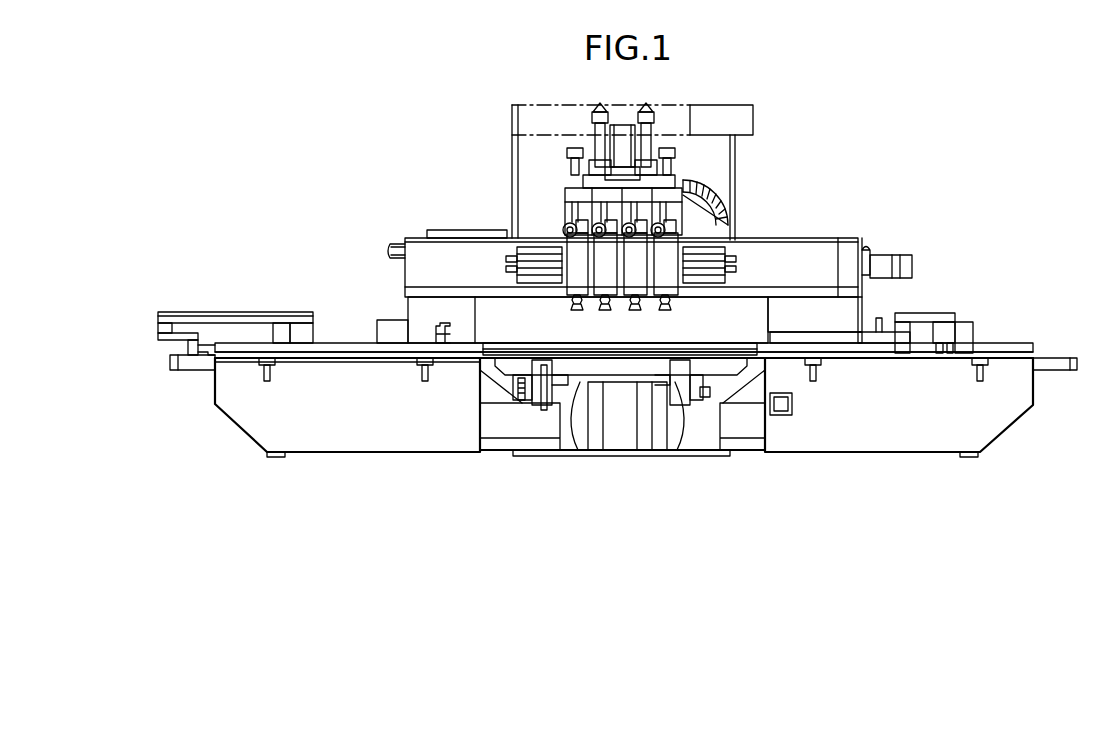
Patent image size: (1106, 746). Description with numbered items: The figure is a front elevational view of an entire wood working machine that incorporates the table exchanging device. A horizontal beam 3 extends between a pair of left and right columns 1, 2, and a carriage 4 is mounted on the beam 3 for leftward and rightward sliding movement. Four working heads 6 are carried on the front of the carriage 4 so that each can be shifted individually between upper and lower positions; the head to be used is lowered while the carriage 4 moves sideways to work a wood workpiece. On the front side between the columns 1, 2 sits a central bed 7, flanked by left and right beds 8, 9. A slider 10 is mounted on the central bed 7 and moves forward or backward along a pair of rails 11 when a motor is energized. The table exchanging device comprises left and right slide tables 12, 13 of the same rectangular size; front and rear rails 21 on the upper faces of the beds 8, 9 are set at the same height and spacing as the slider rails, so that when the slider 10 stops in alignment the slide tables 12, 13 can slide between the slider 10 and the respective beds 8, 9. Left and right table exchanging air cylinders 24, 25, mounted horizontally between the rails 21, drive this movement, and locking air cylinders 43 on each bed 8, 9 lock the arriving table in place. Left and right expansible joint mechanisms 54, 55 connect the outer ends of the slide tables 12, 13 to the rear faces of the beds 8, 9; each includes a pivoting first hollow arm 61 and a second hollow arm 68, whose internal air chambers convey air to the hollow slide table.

The left column 1 is at (415, 325).
The right column 2 is at (813, 305).
The beam 3 is at (795, 258).
The carriage 4 is at (713, 182).
The working heads 6 is at (603, 262).
The central bed 7 is at (620, 430).
The left bed 8 is at (357, 430).
The right bed 9 is at (900, 425).
The slider 10 is at (628, 382).
The rails 11 is at (565, 420).
The left side slide table 12 is at (392, 360).
The right side slide table 13 is at (628, 345).
The front and rear rails 21 is at (335, 360).
The left table exchanging air cylinder 24 is at (185, 375).
The right table exchanging air cylinder 25 is at (1062, 370).
The locking air cylinders 43 is at (266, 368).
The left side expansible joint mechanism 54 is at (197, 312).
The right side expansible joint mechanism 55 is at (882, 327).
The first hollow arm 61 is at (165, 340).
The second hollow arm 68 is at (242, 318).